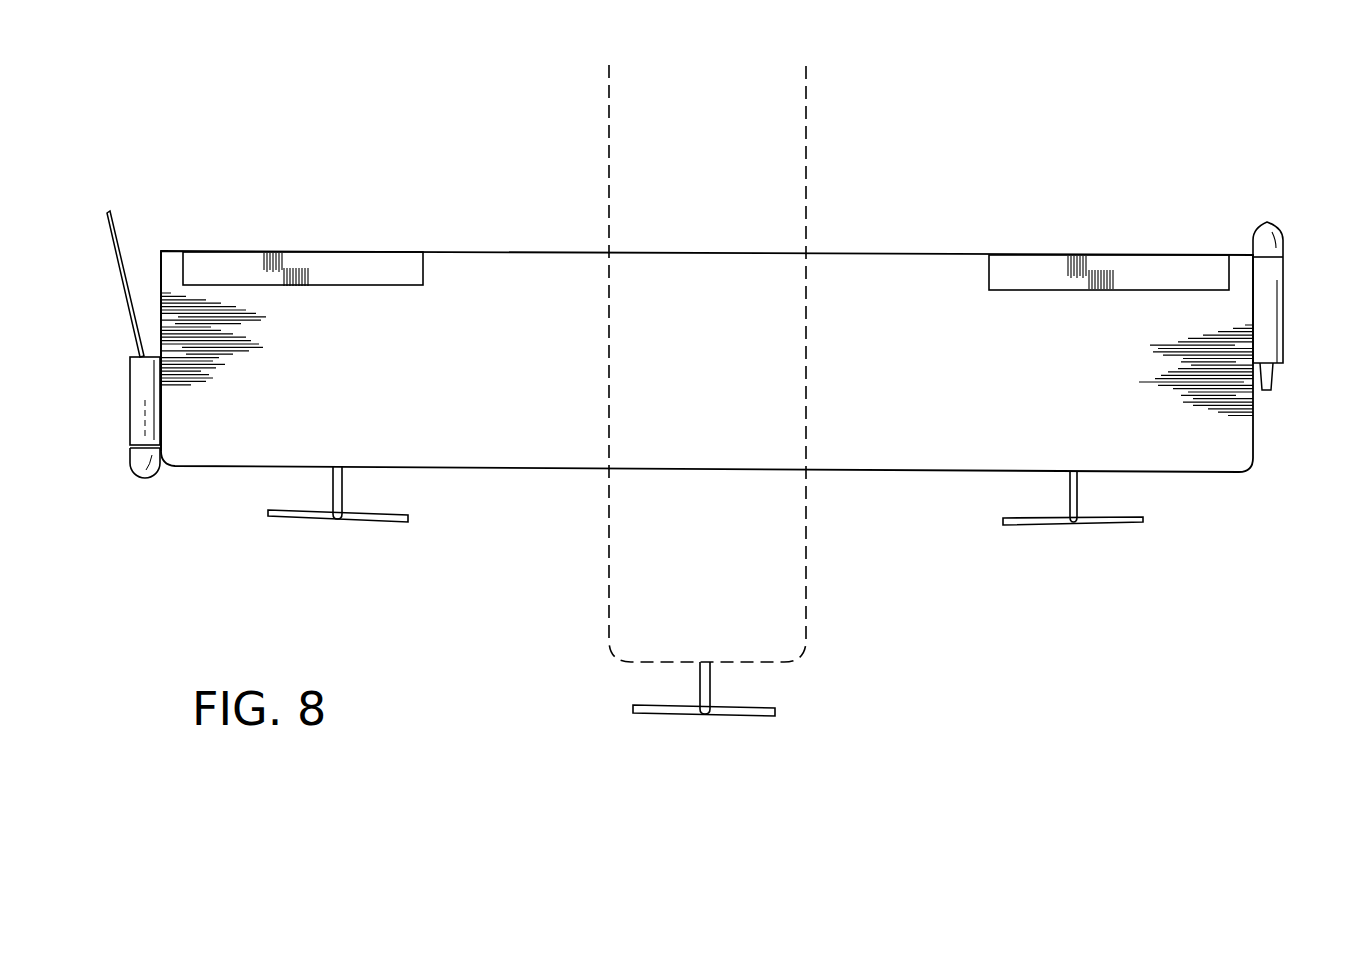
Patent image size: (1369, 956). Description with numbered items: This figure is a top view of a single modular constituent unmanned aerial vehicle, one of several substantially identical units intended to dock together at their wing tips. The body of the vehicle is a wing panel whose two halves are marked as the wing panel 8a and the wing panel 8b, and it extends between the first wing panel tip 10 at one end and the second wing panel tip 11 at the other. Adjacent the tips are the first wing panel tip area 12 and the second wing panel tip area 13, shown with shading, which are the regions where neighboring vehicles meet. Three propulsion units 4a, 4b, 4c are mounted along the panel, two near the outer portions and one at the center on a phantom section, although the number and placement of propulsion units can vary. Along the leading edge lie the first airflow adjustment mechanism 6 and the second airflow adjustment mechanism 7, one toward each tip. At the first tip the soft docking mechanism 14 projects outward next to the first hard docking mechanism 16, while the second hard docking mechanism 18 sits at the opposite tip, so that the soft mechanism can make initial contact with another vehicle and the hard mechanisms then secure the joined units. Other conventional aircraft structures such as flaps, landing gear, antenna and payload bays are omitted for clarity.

The propulsion unit 4a is at (383, 522).
The propulsion unit 4b is at (1125, 525).
The propulsion unit 4c is at (733, 717).
The first airflow adjustment mechanism 6 is at (298, 251).
The second airflow adjustment mechanism 7 is at (1098, 255).
The wing panel 8a is at (426, 386).
The wing panel 8b is at (966, 385).
The first wing panel tip 10 is at (162, 408).
The second wing panel tip 11 is at (1253, 432).
The first wing panel tip area 12 is at (284, 368).
The second wing panel tip area 13 is at (1166, 405).
The soft docking mechanism 14 is at (122, 297).
The first hard docking mechanism 16 is at (130, 433).
The second hard docking mechanism 18 is at (1285, 305).